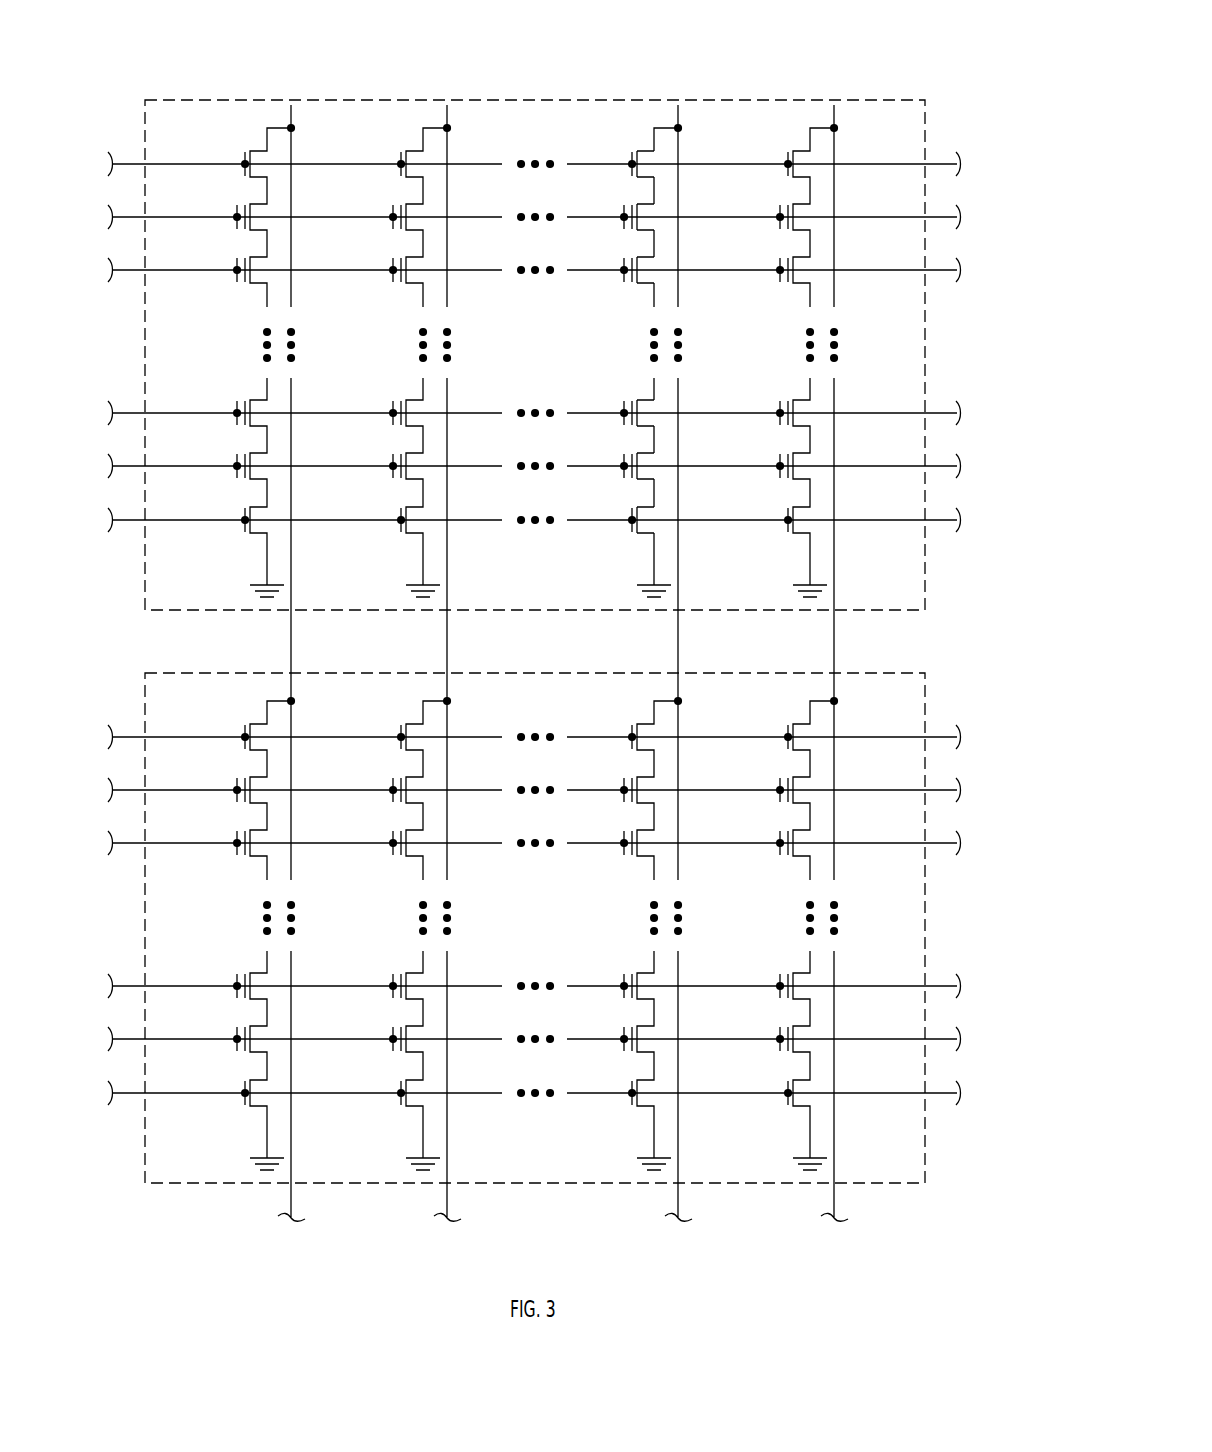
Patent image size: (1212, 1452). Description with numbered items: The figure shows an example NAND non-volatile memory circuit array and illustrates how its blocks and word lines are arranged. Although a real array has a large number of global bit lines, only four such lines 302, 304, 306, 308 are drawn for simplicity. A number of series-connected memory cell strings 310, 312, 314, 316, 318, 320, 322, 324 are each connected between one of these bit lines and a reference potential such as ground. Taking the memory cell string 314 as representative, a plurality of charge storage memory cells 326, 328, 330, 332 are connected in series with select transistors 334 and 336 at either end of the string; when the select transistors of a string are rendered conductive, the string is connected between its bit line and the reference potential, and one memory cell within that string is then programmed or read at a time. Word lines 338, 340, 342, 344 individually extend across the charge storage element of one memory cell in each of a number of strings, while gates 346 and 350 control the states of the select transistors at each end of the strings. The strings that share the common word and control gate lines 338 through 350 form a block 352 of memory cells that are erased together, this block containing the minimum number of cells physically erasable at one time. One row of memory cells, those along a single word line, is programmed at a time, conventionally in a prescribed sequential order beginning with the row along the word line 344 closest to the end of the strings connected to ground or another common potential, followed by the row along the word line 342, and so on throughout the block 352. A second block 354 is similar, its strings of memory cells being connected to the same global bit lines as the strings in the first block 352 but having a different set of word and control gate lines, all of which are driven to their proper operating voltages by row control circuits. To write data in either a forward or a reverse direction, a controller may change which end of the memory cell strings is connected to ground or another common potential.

The global bit line 302 is at (291, 150).
The global bit line 304 is at (447, 150).
The global bit line 306 is at (678, 150).
The global bit line 308 is at (834, 150).
The memory cell string 310 is at (247, 385).
The memory cell string 312 is at (403, 385).
The memory cell string 314 is at (626, 326).
The memory cell string 316 is at (788, 383).
The memory cell string 318 is at (247, 958).
The memory cell string 320 is at (403, 958).
The memory cell string 322 is at (632, 958).
The memory cell string 324 is at (788, 956).
The charge storage memory cell 326 is at (624, 207).
The charge storage memory cell 328 is at (624, 260).
The charge storage memory cell 330 is at (625, 405).
The charge storage memory cell 332 is at (625, 460).
The select transistor 334 is at (632, 513).
The select transistor 336 is at (633, 150).
The word line 338 is at (935, 217).
The word line 340 is at (935, 270).
The word line 342 is at (935, 413).
The word line 344 is at (935, 466).
The control gate line 346 is at (935, 164).
The control gate line 350 is at (935, 520).
The block 352 is at (518, 99).
The second block 354 is at (638, 1183).